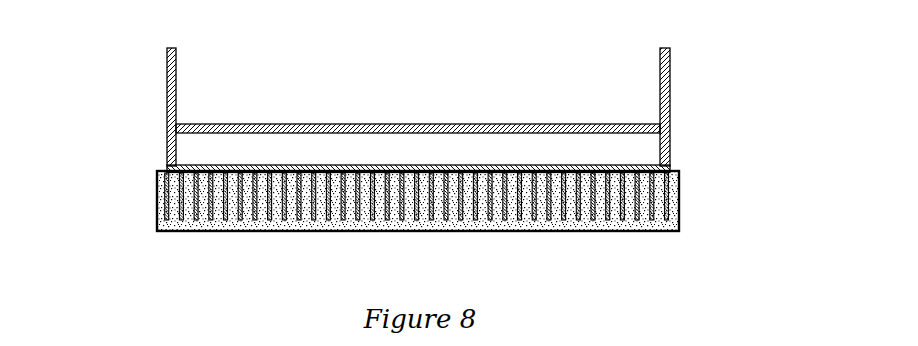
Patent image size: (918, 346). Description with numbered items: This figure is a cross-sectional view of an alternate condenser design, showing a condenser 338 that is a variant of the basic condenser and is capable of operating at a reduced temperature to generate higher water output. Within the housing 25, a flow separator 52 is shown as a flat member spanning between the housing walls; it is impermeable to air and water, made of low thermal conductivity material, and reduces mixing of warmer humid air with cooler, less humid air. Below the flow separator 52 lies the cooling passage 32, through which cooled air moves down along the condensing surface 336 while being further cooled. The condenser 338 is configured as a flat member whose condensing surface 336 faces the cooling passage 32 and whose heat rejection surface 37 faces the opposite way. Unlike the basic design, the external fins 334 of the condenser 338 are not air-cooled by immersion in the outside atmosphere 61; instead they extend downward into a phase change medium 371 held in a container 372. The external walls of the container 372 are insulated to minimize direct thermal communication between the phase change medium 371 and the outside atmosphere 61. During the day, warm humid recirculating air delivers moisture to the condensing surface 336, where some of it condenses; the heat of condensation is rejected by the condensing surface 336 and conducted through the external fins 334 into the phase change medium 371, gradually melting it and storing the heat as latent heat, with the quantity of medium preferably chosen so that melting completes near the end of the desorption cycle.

The housing 25 is at (670, 80).
The flow separator 52 is at (280, 123).
The cooling passage 32 is at (309, 150).
The condenser 338 is at (360, 157).
The condensing surface 336 is at (487, 165).
The outside atmosphere 61 is at (759, 161).
The phase change medium 371 is at (357, 223).
The container 372 is at (157, 200).
The heat rejection surface 37 is at (236, 205).
The external fins 334 is at (213, 220).